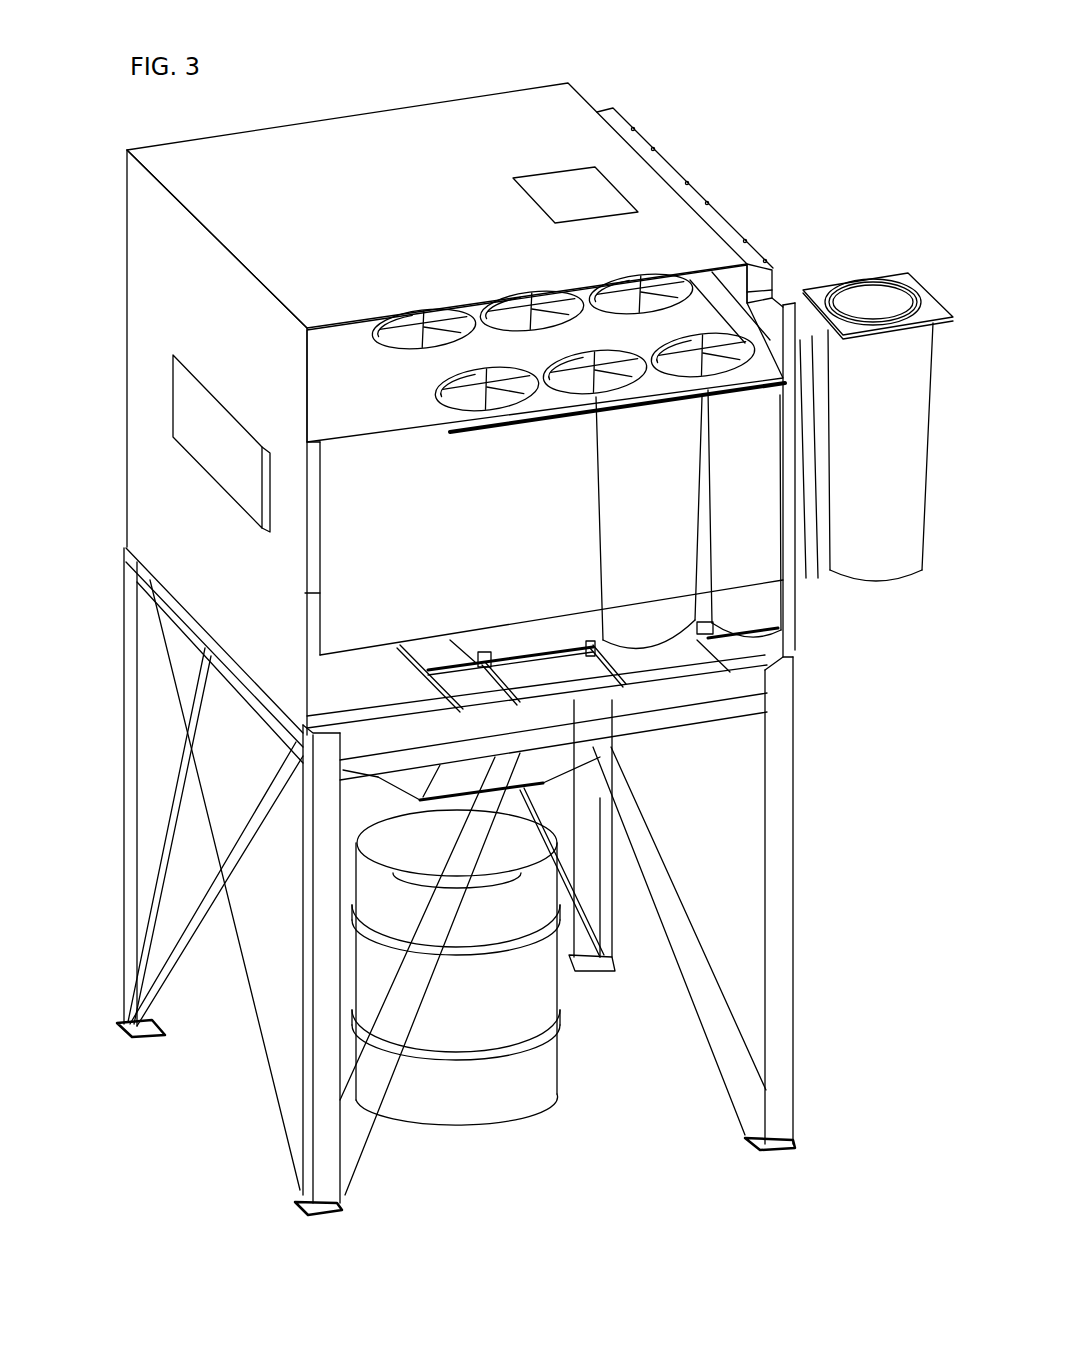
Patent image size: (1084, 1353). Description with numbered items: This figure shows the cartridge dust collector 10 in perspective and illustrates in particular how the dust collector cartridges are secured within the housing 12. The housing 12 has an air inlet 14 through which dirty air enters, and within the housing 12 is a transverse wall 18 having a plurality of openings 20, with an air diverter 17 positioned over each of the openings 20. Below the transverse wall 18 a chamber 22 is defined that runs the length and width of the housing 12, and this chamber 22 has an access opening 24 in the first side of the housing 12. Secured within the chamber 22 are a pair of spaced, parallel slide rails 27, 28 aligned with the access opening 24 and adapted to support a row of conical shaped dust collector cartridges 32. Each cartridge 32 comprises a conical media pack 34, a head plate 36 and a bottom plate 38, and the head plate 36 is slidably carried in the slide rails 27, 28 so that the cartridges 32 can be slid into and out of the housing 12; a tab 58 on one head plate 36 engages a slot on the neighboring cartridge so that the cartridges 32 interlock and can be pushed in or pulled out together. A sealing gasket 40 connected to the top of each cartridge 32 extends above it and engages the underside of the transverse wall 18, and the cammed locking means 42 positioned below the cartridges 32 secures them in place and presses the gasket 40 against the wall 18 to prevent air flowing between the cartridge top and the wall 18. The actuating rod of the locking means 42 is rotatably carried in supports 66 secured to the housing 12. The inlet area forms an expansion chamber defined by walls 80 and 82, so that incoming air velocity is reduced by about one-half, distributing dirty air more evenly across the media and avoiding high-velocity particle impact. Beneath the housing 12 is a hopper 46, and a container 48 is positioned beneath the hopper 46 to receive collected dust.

The cartridge dust collector 10 is at (497, 135).
The housing 12 is at (190, 168).
The air inlet 14 is at (206, 437).
The air diverter 17 is at (492, 380).
The transverse wall 18 is at (358, 410).
The openings 20 is at (467, 393).
The chamber 22 is at (313, 603).
The access opening 24 is at (798, 572).
The slide rail 27 is at (537, 420).
The slide rail 28 is at (545, 371).
The dust collector cartridges 32 is at (905, 437).
The media pack 34 is at (908, 527).
The head plate 36 is at (935, 313).
The bottom plate 38 is at (880, 585).
The sealing gasket 40 is at (873, 293).
The cammed locking means 42 is at (601, 800).
The hopper 46 is at (430, 783).
The container 48 is at (522, 1010).
The tab 58 is at (812, 292).
The supports 66 is at (410, 668).
The wall 80 is at (337, 522).
The wall 82 is at (260, 476).